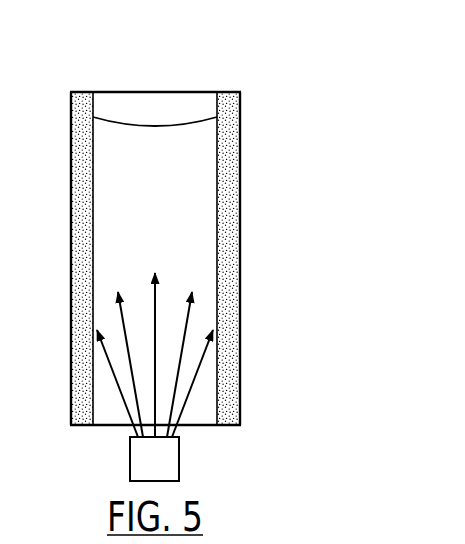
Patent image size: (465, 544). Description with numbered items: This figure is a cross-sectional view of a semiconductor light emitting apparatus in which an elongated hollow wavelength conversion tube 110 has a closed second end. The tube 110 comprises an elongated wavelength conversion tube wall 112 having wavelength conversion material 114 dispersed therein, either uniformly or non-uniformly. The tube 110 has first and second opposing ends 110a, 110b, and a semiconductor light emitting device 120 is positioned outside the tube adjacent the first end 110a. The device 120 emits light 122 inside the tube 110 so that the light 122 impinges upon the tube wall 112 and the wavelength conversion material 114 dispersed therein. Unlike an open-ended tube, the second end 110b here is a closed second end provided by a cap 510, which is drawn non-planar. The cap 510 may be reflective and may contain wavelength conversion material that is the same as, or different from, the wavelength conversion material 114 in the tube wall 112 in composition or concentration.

The elongated hollow wavelength conversion tube 110 is at (172, 257).
The first end 110a is at (98, 428).
The second end 110b is at (160, 90).
The elongated wavelength conversion tube wall 112 is at (240, 237).
The wavelength conversion material 114 is at (83, 230).
The semiconductor light emitting device 120 is at (168, 460).
The light 122 is at (153, 298).
The cap 510 is at (128, 102).